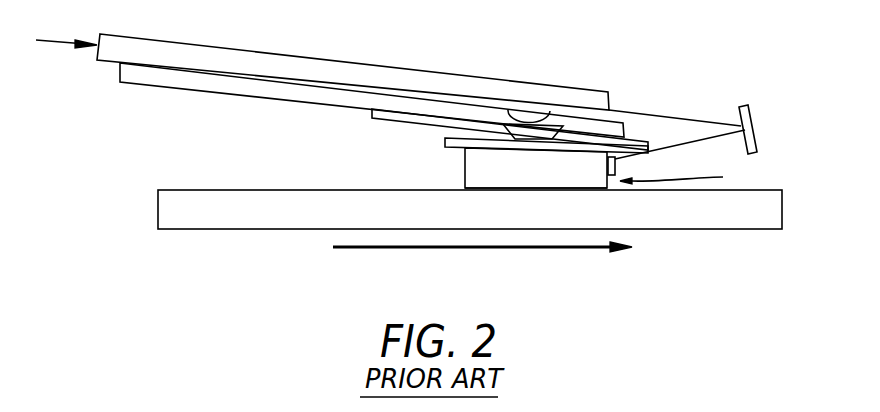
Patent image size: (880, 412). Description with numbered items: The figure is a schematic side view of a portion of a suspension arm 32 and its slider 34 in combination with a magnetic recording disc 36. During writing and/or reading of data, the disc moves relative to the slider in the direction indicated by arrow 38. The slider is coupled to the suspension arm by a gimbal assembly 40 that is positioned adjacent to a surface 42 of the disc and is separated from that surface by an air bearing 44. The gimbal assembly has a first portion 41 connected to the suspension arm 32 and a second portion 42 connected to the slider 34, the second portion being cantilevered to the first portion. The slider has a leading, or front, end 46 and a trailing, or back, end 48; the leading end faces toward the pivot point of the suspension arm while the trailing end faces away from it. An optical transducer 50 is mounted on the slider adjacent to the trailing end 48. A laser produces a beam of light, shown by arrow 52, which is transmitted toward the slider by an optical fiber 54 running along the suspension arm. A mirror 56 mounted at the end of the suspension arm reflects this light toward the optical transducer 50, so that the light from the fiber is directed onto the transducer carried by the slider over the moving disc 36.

The suspension arm 32 is at (308, 102).
The slider 34 is at (470, 160).
The magnetic recording disc 36 is at (783, 208).
The arrow 38 is at (520, 248).
The gimbal assembly 40 is at (592, 114).
The first portion 41 is at (457, 123).
The second portion 42 is at (488, 143).
The air bearing 44 is at (465, 188).
The leading end 46 is at (460, 155).
The trailing end 48 is at (685, 174).
The optical transducer 50 is at (616, 170).
The arrow 52 is at (58, 43).
The optical fiber 54 is at (333, 68).
The mirror 56 is at (755, 128).